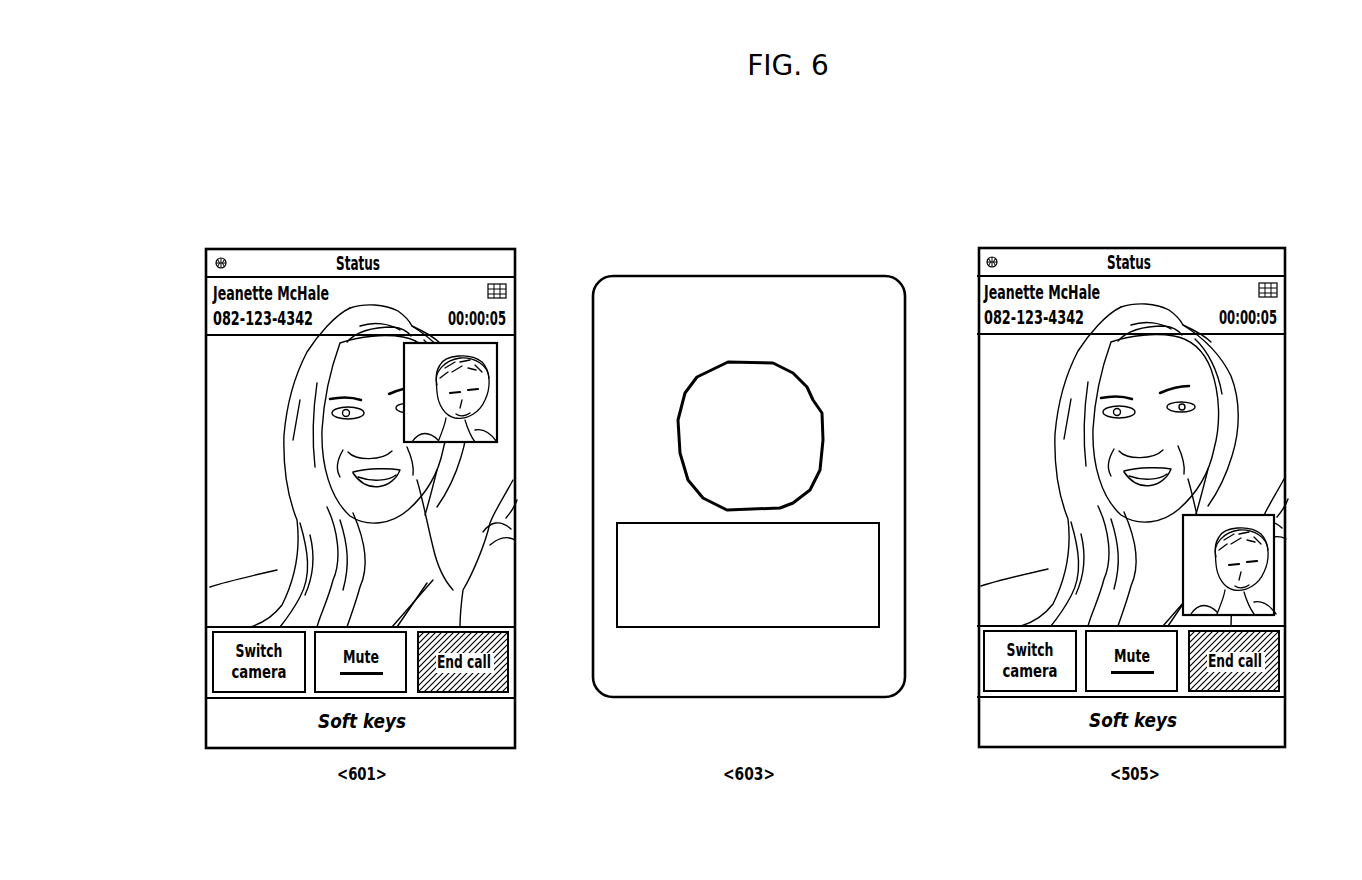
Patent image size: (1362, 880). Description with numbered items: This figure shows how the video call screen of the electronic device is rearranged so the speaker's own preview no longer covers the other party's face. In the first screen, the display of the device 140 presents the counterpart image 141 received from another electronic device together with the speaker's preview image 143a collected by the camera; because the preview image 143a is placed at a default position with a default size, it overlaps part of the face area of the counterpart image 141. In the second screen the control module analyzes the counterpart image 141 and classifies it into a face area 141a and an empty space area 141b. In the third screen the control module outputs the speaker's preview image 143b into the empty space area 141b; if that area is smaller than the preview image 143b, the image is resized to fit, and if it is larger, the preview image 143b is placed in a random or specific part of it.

The mobile terminal 140 is at (489, 239).
The counterpart image 141 is at (774, 474).
The face area 141a is at (797, 442).
The empty space area 141b is at (847, 570).
The speaker's preview image 143a is at (483, 415).
The speaker's preview image 143b is at (1262, 585).